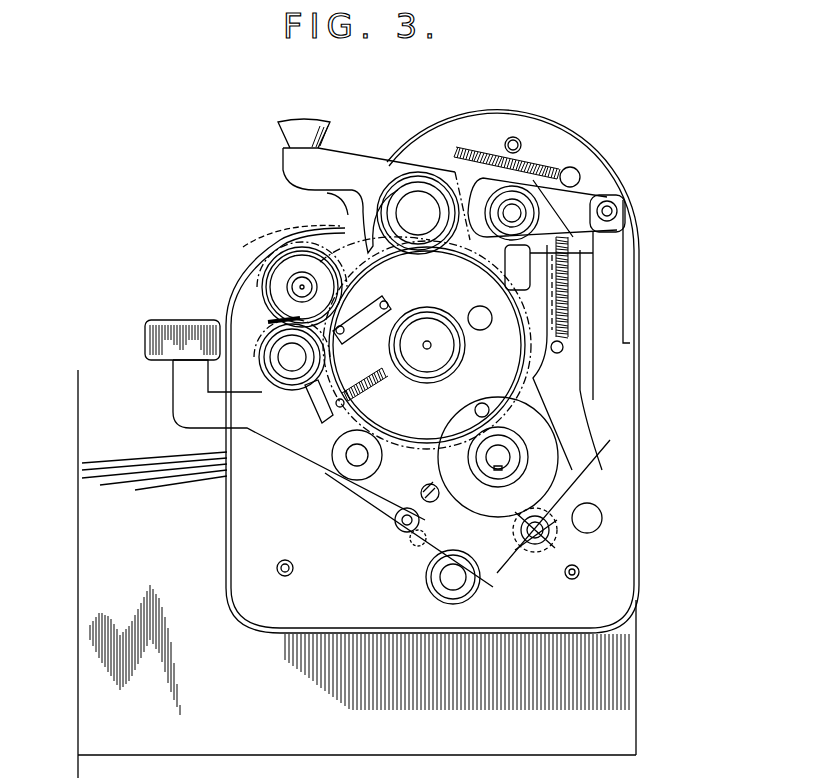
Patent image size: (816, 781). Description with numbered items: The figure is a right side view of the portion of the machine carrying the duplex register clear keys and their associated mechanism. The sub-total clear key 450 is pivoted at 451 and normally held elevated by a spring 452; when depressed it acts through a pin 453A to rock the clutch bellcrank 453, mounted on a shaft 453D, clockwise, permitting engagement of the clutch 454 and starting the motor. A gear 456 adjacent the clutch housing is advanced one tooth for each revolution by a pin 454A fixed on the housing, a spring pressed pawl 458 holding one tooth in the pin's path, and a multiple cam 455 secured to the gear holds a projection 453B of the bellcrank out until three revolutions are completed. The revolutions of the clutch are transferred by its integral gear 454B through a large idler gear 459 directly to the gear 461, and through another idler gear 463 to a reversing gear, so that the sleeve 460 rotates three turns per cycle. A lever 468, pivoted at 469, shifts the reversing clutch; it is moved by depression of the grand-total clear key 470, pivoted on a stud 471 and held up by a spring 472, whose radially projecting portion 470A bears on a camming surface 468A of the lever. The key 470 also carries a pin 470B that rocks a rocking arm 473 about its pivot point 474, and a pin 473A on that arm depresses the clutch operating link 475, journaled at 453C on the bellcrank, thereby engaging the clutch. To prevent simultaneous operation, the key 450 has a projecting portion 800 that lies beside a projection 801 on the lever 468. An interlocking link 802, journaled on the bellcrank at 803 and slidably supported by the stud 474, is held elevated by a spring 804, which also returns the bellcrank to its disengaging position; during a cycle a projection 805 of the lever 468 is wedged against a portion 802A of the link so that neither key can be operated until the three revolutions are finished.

The sub-total clear key 450 is at (145, 334).
The pivot 451 is at (355, 456).
The spring 452 is at (374, 392).
The clutch bellcrank 453 is at (422, 565).
The pin 453A is at (400, 523).
The projection 453B is at (545, 548).
The journal 453C is at (558, 538).
The shaft 453D is at (452, 578).
The clutch 454 is at (452, 429).
The pin 454A is at (483, 403).
The integral gear 454B is at (472, 457).
The multiple cam 455 is at (532, 550).
The gear 456 is at (517, 498).
The spring pressed pawl 458 is at (445, 531).
The large idler gear 459 is at (523, 340).
The sleeve 460 is at (236, 380).
The gear 461 is at (270, 388).
The idler gear 463 is at (275, 262).
The lever 468 is at (275, 300).
The camming surface 468A is at (360, 237).
The pivot 469 is at (295, 286).
The grand-total clear key 470 is at (313, 134).
The radially projecting portion 470A is at (346, 212).
The pin 470B is at (481, 255).
The stud 471 is at (413, 208).
The spring 472 is at (488, 150).
The rocking arm 473 is at (607, 205).
The pin 473A is at (624, 209).
The pivot point 474 is at (515, 210).
The clutch operating link 475 is at (612, 278).
The projecting portion 800 is at (341, 398).
The projection 801 is at (322, 412).
The interlocking link 802 is at (578, 386).
The portion 802A is at (583, 259).
The journal 803 is at (590, 518).
The spring 804 is at (582, 320).
The projection 805 is at (582, 300).